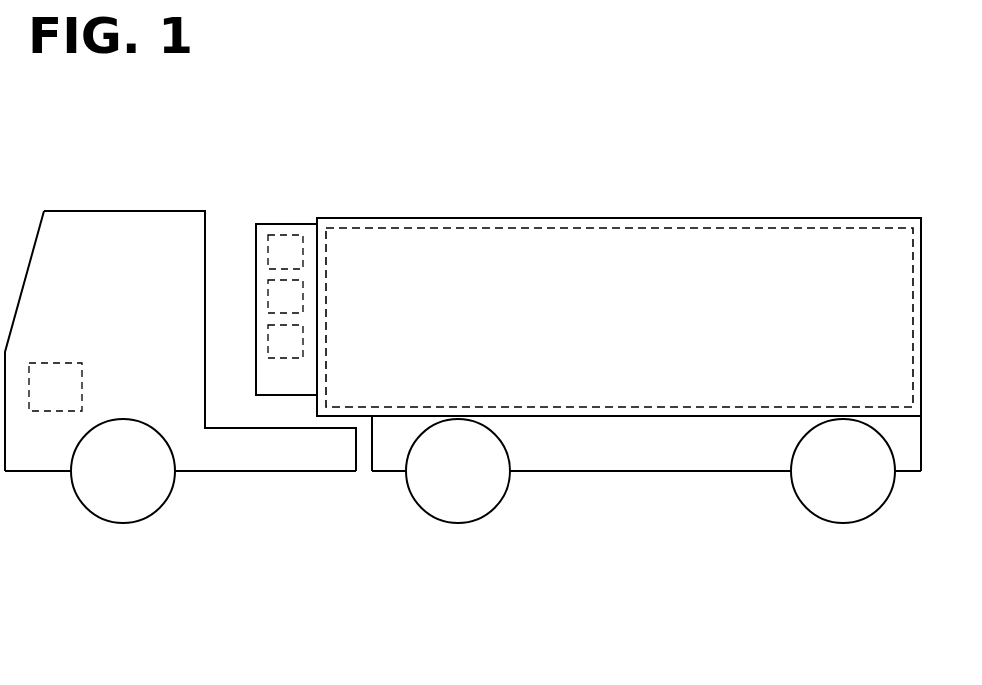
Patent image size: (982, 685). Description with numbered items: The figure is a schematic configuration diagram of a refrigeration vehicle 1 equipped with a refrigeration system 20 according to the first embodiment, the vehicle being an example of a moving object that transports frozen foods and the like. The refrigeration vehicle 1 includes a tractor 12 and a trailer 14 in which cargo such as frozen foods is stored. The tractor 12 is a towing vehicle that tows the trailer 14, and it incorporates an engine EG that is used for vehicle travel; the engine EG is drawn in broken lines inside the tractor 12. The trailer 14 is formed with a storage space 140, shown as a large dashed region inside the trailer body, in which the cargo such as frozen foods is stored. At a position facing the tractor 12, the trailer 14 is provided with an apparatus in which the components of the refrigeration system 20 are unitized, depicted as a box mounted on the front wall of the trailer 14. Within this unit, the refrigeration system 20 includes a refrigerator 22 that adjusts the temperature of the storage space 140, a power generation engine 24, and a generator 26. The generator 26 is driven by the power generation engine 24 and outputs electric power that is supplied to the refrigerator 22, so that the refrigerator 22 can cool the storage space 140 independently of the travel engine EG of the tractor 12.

The refrigeration vehicle 1 is at (678, 170).
The tractor 12 is at (118, 210).
The trailer 14 is at (469, 218).
The storage space 140 is at (559, 283).
The refrigeration system 20 is at (291, 222).
The refrigerator 22 is at (268, 258).
The power generation engine 24 is at (268, 303).
The generator 26 is at (268, 348).
The engine EG is at (48, 411).